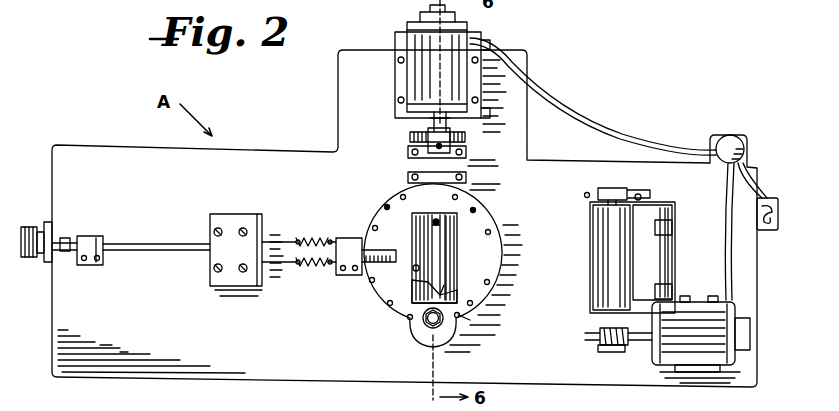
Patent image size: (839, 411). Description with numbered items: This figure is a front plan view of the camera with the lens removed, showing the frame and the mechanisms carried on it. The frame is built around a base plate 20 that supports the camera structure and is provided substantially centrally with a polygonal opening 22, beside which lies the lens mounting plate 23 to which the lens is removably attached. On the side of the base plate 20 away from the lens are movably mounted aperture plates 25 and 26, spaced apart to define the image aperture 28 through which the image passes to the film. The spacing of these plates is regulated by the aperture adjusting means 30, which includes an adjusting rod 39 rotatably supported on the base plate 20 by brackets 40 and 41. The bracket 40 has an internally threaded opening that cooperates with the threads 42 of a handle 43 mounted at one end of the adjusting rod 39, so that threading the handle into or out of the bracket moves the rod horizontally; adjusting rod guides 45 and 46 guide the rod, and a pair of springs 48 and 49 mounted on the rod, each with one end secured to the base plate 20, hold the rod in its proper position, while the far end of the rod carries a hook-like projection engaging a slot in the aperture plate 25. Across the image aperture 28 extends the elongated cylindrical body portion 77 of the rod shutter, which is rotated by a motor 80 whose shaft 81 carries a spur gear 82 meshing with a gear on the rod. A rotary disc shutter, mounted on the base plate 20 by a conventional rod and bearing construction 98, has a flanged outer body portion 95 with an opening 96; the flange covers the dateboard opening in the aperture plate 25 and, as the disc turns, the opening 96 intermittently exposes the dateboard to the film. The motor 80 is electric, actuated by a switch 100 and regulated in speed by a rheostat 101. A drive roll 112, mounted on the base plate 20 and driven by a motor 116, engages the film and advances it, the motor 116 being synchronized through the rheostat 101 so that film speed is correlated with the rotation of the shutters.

The base plate 20 is at (290, 163).
The polygonal opening 22 is at (410, 270).
The lens mounting plate 23 is at (460, 292).
The aperture plate 25 is at (418, 238).
The aperture plate 26 is at (448, 268).
The image aperture 28 is at (442, 198).
The aperture adjusting means 30 is at (164, 198).
The adjusting rod 39 is at (158, 244).
The bracket 40 is at (52, 237).
The bracket 41 is at (262, 216).
The threads 42 is at (41, 254).
The handle 43 is at (30, 227).
The adjusting rod guide 45 is at (92, 265).
The adjusting rod guide 46 is at (350, 240).
The spring 48 is at (318, 240).
The spring 49 is at (316, 265).
The elongated cylindrical body portion 77 is at (440, 240).
The motor 80 is at (418, 76).
The shaft 81 is at (430, 124).
The spur gear 82 is at (410, 140).
The flanged outer body portion 95 is at (488, 302).
The opening 96 is at (428, 284).
The rod and bearing construction 98 is at (424, 328).
The switch 100 is at (772, 198).
The rheostat 101 is at (732, 136).
The drive roll 112 is at (606, 246).
The motor 116 is at (695, 300).